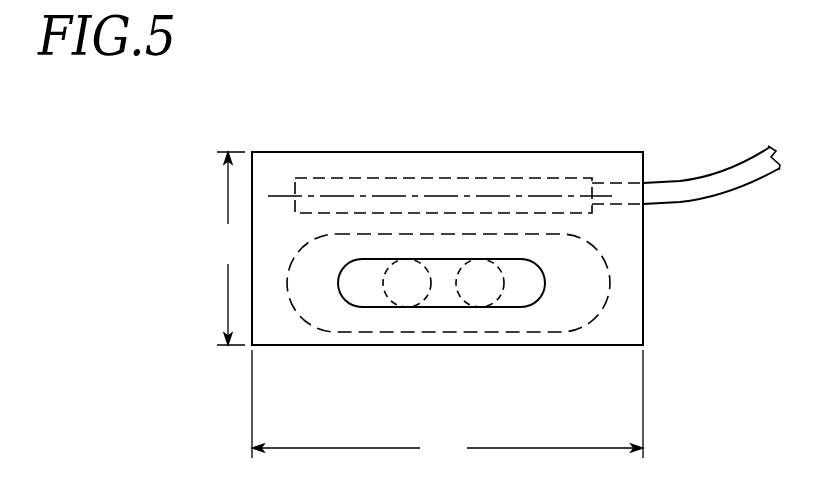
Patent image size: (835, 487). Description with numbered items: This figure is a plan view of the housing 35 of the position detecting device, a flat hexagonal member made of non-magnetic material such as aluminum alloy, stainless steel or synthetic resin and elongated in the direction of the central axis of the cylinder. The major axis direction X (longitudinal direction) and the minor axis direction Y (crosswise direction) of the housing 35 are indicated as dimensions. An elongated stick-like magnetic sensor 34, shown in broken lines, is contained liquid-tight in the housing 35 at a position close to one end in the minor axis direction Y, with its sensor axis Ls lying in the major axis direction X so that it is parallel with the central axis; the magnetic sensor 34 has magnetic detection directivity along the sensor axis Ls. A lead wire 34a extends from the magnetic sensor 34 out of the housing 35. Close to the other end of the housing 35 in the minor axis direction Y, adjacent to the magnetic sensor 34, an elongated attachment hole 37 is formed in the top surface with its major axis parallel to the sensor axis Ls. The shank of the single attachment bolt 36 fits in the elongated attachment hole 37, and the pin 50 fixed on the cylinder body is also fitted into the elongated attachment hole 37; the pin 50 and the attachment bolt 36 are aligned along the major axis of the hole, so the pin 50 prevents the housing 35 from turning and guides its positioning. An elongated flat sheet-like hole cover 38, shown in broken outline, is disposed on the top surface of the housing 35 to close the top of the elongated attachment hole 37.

The magnetic sensor 34 is at (426, 190).
The lead wire 34a is at (742, 170).
The housing 35 is at (546, 163).
The attachment bolt 36 is at (413, 283).
The elongated attachment hole 37 is at (368, 280).
The hole cover 38 is at (594, 267).
The pin 50 is at (478, 283).
The sensor axis Ls is at (357, 196).
The major axis direction X is at (447, 410).
The minor axis direction Y is at (231, 248).